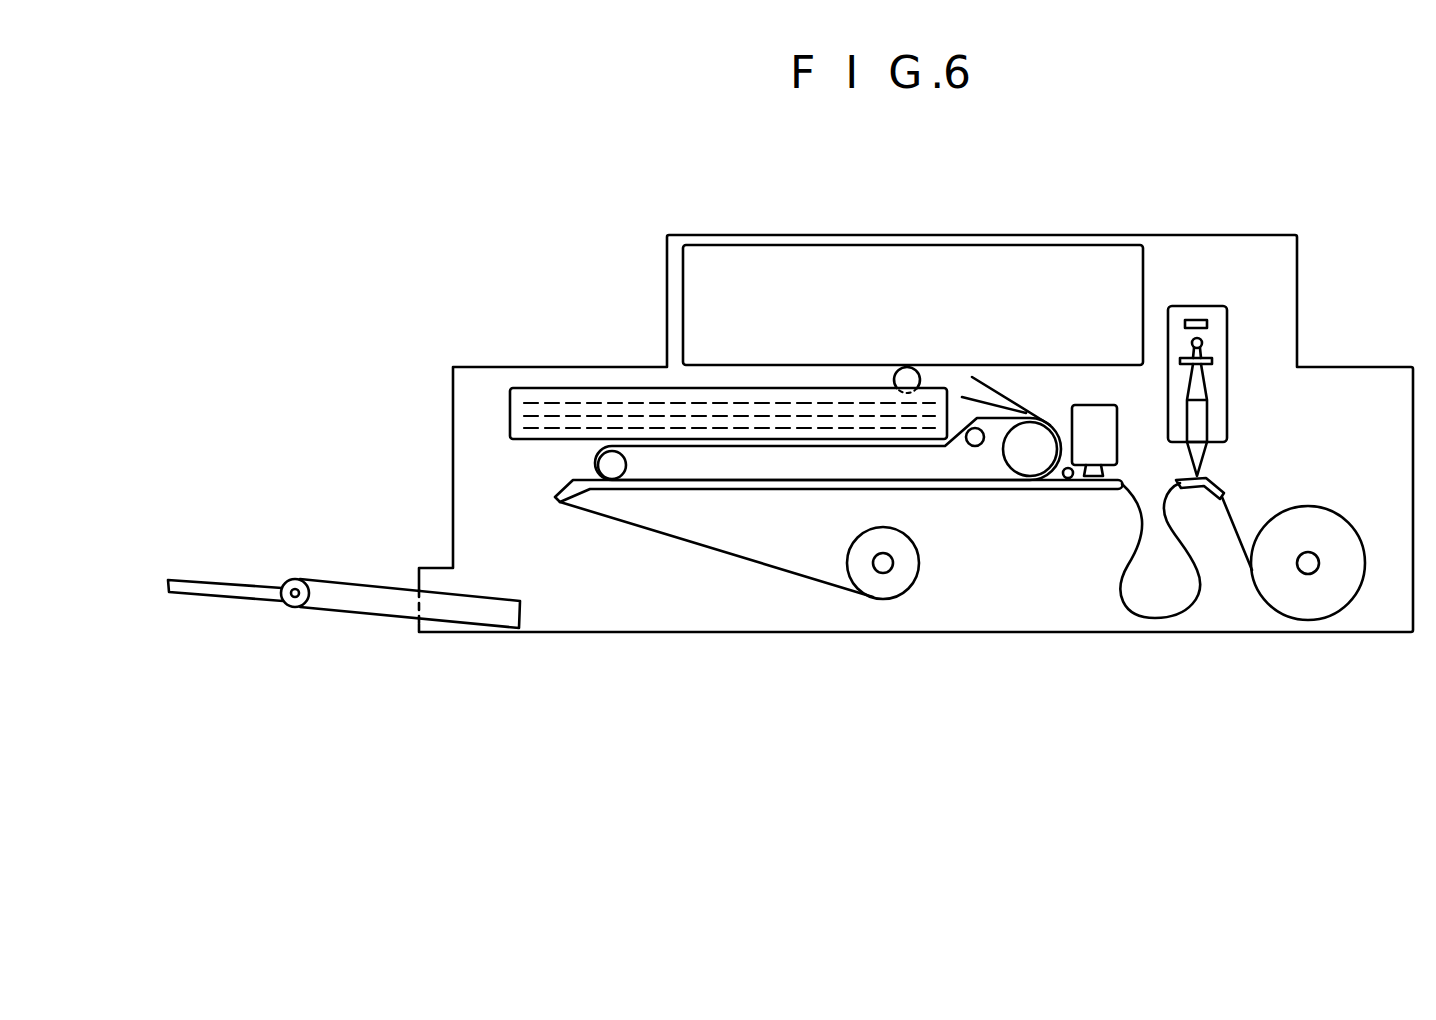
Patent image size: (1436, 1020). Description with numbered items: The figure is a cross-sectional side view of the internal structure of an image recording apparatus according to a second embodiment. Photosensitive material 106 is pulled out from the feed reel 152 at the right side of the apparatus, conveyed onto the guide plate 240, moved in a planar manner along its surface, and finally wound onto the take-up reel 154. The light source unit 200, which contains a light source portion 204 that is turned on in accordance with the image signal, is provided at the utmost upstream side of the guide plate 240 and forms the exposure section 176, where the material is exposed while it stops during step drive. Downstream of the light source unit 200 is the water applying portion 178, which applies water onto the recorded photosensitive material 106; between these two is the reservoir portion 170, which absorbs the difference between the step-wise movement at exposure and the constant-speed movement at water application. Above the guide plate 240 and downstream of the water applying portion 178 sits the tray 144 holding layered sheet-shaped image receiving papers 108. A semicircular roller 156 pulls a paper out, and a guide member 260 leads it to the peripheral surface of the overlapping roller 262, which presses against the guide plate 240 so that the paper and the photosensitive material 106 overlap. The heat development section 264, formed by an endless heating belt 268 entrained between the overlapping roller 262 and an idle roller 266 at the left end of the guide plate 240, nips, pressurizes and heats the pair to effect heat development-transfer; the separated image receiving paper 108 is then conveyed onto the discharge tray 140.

The photosensitive material 106 is at (1241, 552).
The image receiving paper 108 is at (583, 397).
The discharge tray 140 is at (353, 582).
The tray 144 is at (511, 400).
The feed reel 152 is at (1308, 575).
The take-up reel 154 is at (886, 574).
The semicircular roller 156 is at (899, 371).
The reservoir portion 170 is at (1157, 582).
The exposure section 176 is at (1216, 474).
The water applying portion 178 is at (1095, 404).
The light source unit 200 is at (1233, 327).
The light source portion 204 is at (1207, 318).
The guide plate 240 is at (1065, 479).
The guide member 260 is at (1016, 406).
The overlapping roller 262 is at (1018, 460).
The heat development section 264 is at (707, 457).
The idle roller 266 is at (603, 478).
The heating belt 268 is at (683, 448).